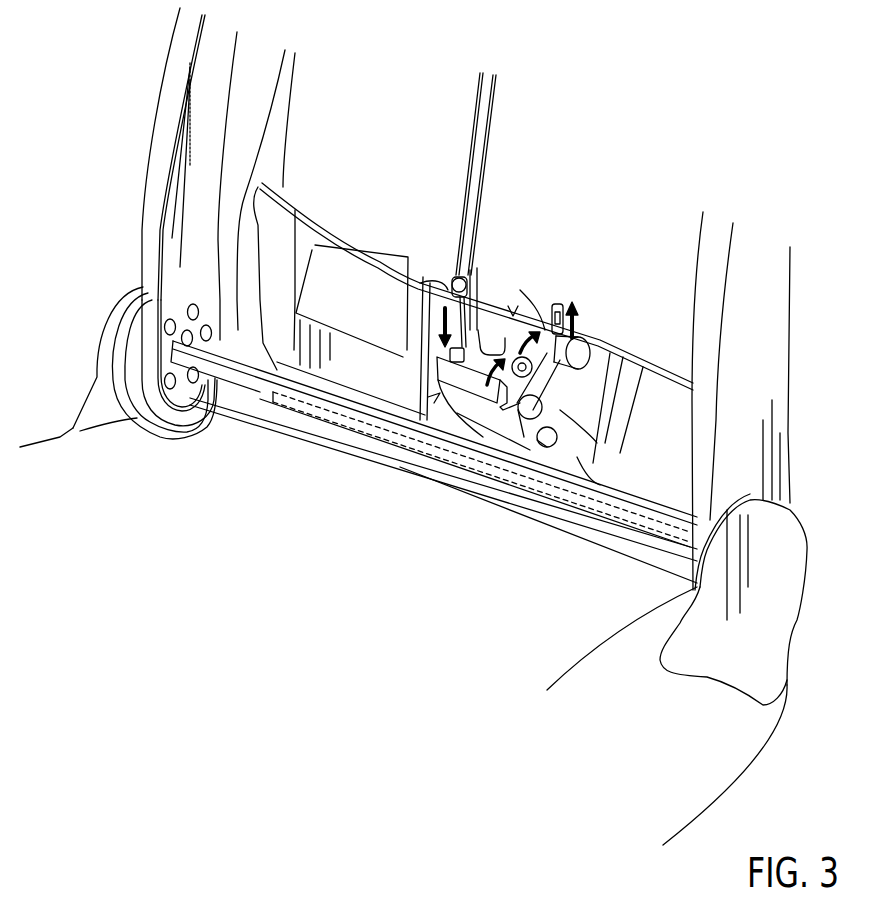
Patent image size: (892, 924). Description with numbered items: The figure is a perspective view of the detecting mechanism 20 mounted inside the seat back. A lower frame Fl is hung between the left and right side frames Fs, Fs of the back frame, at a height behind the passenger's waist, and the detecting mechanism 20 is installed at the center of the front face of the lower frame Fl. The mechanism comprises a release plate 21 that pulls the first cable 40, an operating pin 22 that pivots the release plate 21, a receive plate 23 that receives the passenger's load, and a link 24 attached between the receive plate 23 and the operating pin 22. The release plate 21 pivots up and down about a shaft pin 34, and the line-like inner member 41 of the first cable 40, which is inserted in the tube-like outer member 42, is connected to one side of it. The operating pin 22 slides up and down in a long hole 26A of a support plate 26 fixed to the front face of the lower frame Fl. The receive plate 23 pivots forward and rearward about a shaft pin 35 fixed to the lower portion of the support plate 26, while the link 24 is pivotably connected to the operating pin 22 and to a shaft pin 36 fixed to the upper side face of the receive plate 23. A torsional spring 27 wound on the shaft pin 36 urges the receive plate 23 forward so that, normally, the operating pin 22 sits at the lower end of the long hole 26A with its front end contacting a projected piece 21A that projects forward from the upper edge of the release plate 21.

The side frame Fs is at (170, 100).
The lower frame Fl is at (355, 282).
The detecting mechanism 20 is at (510, 312).
The release plate 21 is at (457, 275).
The projected piece 21A is at (545, 315).
The operating pin 22 is at (600, 332).
The receive plate 23 is at (483, 417).
The link 24 is at (556, 383).
The support plate 26 is at (583, 310).
The long hole 26A is at (562, 310).
The torsional spring 27 is at (512, 378).
The shaft pin 34 is at (494, 348).
The shaft pin 35 is at (549, 447).
The shaft pin 36 is at (550, 412).
The first cable 40 is at (495, 115).
The inner member 41 is at (445, 300).
The outer member 42 is at (478, 95).